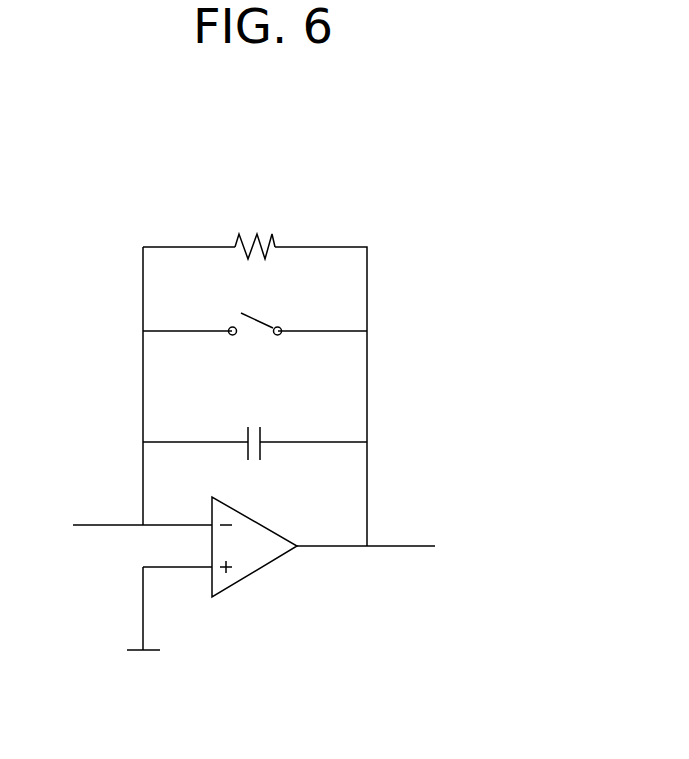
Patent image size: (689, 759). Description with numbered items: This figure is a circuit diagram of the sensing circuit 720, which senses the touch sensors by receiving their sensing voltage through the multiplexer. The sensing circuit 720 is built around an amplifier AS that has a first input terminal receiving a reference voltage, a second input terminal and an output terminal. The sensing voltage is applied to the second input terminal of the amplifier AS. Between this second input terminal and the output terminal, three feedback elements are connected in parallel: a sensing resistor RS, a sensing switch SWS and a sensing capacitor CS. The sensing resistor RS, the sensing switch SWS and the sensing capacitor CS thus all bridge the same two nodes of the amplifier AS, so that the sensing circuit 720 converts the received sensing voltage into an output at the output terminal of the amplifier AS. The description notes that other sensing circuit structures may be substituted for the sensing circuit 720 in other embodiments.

The sensing circuit 720 is at (270, 422).
The sensing resistor RS is at (255, 263).
The sensing switch SWS is at (255, 339).
The sensing capacitor CS is at (254, 429).
The amplifier AS is at (254, 541).